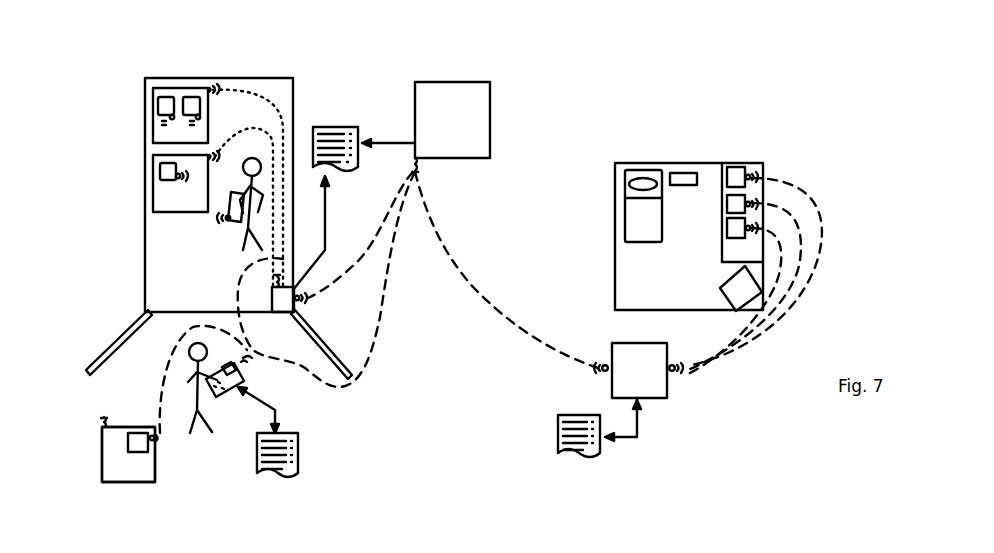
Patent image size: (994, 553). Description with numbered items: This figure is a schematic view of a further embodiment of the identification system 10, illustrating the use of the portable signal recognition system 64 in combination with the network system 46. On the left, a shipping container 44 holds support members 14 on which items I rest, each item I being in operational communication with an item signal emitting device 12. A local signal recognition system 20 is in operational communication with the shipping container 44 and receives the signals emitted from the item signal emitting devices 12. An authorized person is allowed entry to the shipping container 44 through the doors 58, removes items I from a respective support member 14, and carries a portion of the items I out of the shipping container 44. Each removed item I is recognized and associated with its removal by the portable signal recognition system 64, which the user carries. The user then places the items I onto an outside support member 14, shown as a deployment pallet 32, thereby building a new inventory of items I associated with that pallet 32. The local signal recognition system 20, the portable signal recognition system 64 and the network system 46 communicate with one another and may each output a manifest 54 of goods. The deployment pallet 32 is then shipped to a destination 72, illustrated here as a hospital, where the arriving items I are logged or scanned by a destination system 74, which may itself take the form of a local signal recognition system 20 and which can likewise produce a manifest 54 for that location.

The identification system 10 is at (578, 148).
The item signal emitting device 12 is at (168, 116).
The support member 14 is at (180, 87).
The local signal recognition system 20 is at (312, 303).
The pallet 32 is at (100, 427).
The shipping container 44 is at (247, 76).
The network system 46 is at (493, 110).
The manifest 54 is at (337, 124).
The door 58 is at (112, 342).
The portable signal recognition system 64 is at (232, 397).
The destination 72 is at (700, 156).
The destination system 74 is at (668, 398).
The item I is at (190, 89).